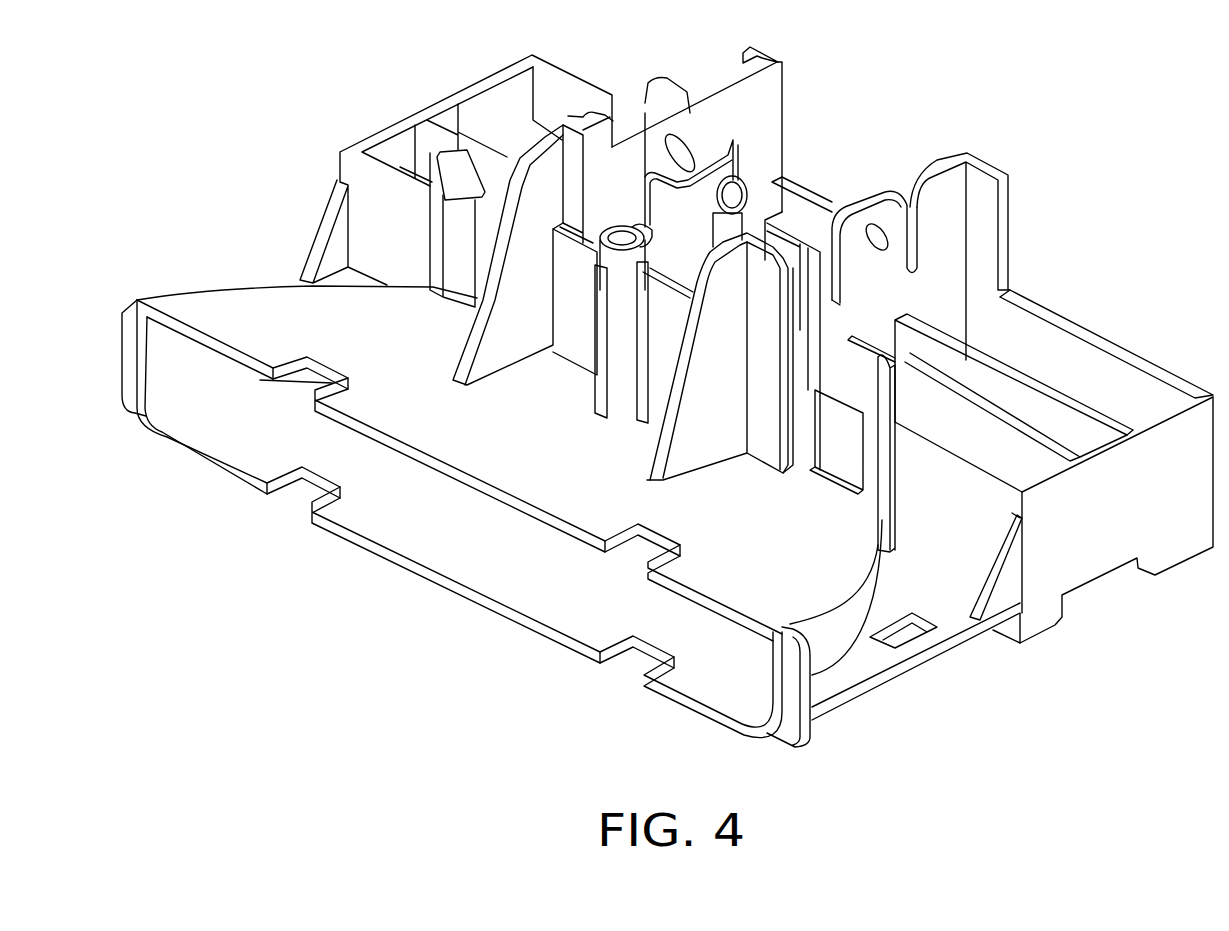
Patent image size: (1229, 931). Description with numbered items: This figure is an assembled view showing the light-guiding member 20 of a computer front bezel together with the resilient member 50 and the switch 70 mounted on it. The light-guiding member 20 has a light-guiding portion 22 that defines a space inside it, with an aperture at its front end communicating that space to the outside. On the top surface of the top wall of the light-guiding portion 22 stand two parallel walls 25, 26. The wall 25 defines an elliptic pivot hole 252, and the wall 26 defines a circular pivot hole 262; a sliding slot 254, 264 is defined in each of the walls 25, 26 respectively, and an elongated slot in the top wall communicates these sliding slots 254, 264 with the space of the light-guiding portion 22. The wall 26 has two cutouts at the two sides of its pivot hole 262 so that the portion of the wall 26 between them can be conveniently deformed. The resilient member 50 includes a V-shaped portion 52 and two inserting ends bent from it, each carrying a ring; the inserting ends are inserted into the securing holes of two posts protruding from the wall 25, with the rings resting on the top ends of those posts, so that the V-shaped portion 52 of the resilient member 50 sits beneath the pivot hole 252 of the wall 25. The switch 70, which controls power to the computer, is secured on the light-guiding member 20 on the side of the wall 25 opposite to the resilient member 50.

The light-guiding member 20 is at (1088, 538).
The light-guiding portion 22 is at (240, 323).
The wall 25 is at (757, 140).
The wall 26 is at (940, 207).
The resilient member 50 is at (735, 158).
The V-shaped portion 52 is at (760, 122).
The switch 70 is at (627, 117).
The pivot hole 252 is at (677, 150).
The sliding slot 254 is at (560, 132).
The pivot hole 262 is at (877, 235).
The sliding slot 264 is at (790, 316).